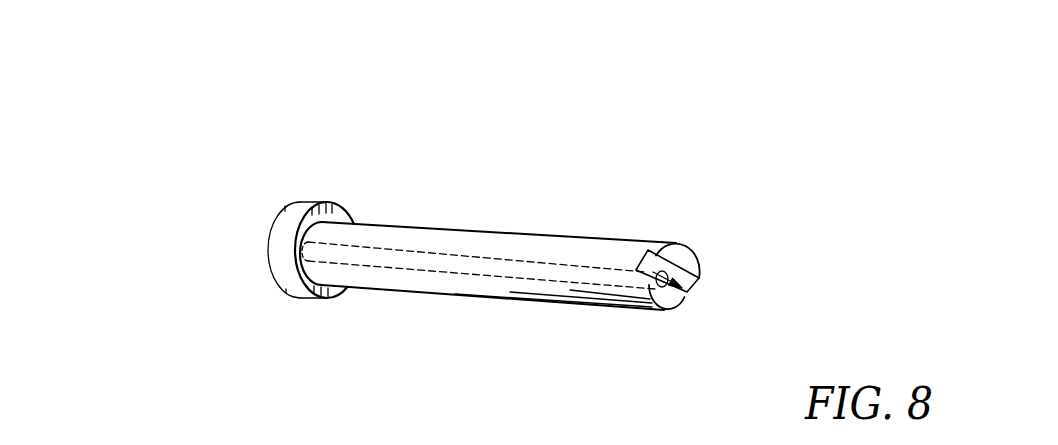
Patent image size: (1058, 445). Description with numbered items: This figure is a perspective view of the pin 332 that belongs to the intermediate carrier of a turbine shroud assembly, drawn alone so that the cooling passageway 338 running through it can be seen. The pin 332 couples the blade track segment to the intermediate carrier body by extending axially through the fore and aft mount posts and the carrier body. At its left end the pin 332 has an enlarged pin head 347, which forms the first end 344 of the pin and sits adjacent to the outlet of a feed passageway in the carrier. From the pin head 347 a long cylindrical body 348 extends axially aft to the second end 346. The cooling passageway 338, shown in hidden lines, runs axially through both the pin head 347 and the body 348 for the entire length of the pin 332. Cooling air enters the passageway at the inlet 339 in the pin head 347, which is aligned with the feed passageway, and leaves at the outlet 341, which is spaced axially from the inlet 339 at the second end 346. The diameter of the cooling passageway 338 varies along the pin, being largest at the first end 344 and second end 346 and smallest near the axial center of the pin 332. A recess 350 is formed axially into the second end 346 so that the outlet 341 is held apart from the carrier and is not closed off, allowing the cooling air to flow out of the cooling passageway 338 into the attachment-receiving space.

The pin 332 is at (152, 105).
The pin head 347 is at (305, 198).
The first end 344 is at (270, 233).
The inlet 339 is at (311, 250).
The body 348 is at (495, 238).
The cooling passageway 338 is at (465, 271).
The recess 350 is at (638, 255).
The second end 346 is at (695, 262).
The outlet 341 is at (687, 296).